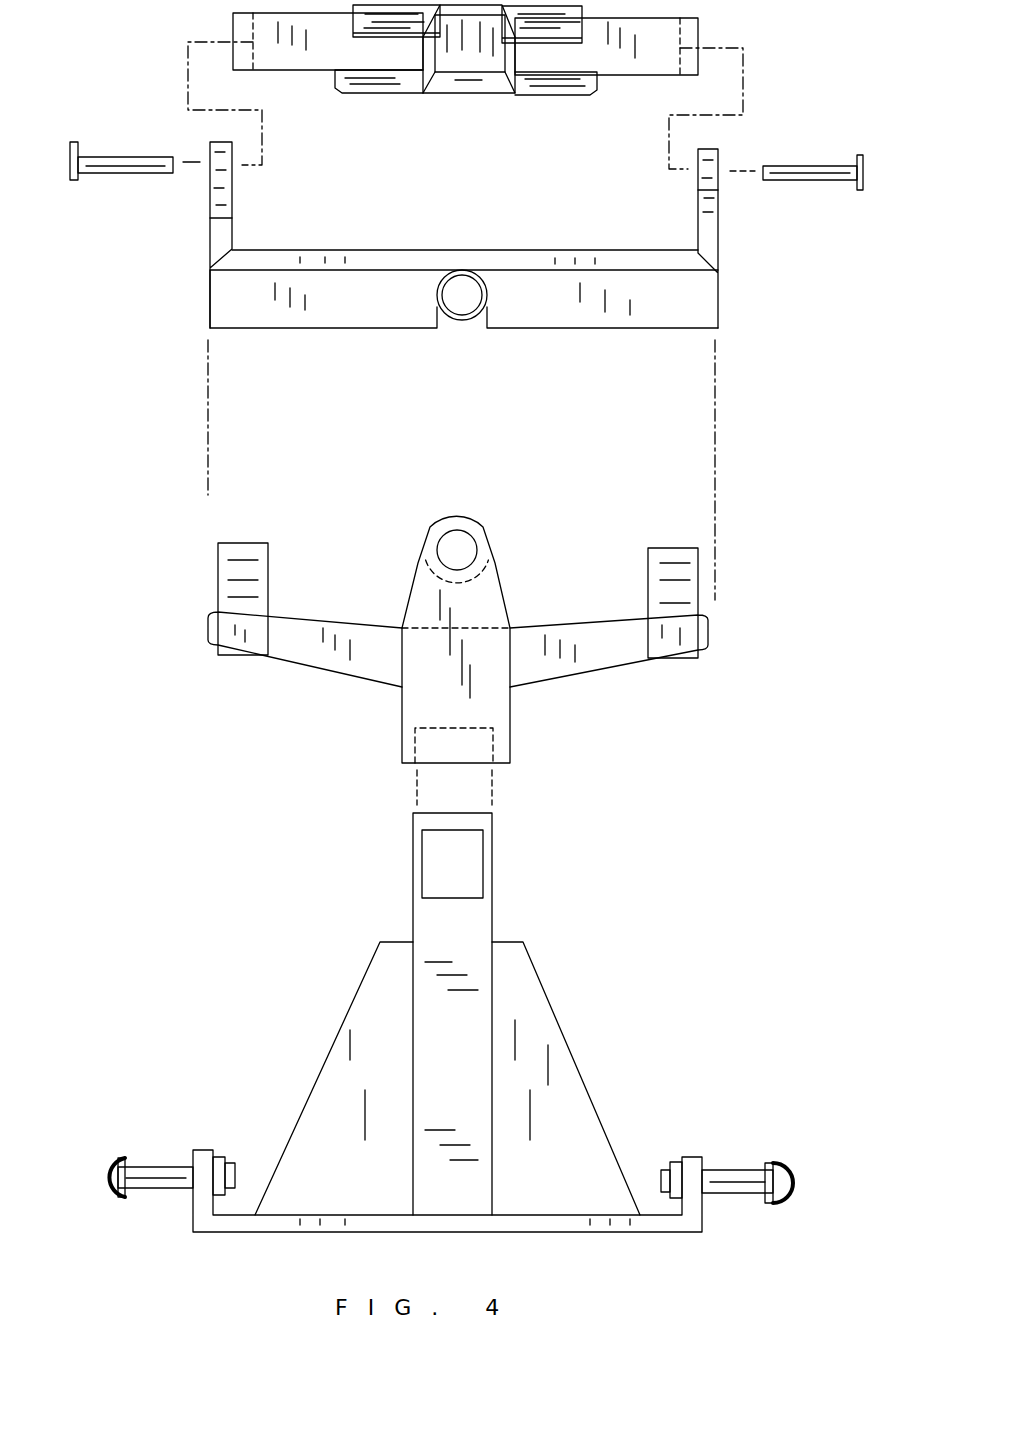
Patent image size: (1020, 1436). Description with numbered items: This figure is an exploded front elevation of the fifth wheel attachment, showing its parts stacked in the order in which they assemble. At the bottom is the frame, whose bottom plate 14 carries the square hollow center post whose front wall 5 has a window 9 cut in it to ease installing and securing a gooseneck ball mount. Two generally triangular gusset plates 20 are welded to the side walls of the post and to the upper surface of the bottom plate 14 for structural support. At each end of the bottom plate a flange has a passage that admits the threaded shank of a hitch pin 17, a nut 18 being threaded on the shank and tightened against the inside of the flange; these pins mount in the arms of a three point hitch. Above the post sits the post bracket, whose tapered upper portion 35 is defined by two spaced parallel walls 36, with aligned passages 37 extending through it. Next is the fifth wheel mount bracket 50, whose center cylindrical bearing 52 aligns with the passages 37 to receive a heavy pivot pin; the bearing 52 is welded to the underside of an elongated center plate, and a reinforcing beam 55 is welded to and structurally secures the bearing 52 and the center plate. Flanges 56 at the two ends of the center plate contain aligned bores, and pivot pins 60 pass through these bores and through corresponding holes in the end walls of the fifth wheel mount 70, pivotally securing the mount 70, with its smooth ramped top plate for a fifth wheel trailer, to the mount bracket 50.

The front wall 5 is at (497, 1014).
The window 9 is at (463, 860).
The bottom plate 14 is at (598, 1226).
The hitch pin 17 is at (153, 1177).
The nut 18 is at (225, 1160).
The gusset plate 20 is at (340, 1052).
The tapered upper portion 35 is at (458, 650).
The parallel wall 36 is at (481, 588).
The aligned passage 37 is at (459, 547).
The fifth wheel mount bracket 50 is at (530, 266).
The center cylindrical bearing 52 is at (458, 322).
The reinforcing beam 55 is at (604, 322).
The flange 56 is at (232, 195).
The pivot pin 60 is at (133, 157).
The fifth wheel mount 70 is at (538, 110).